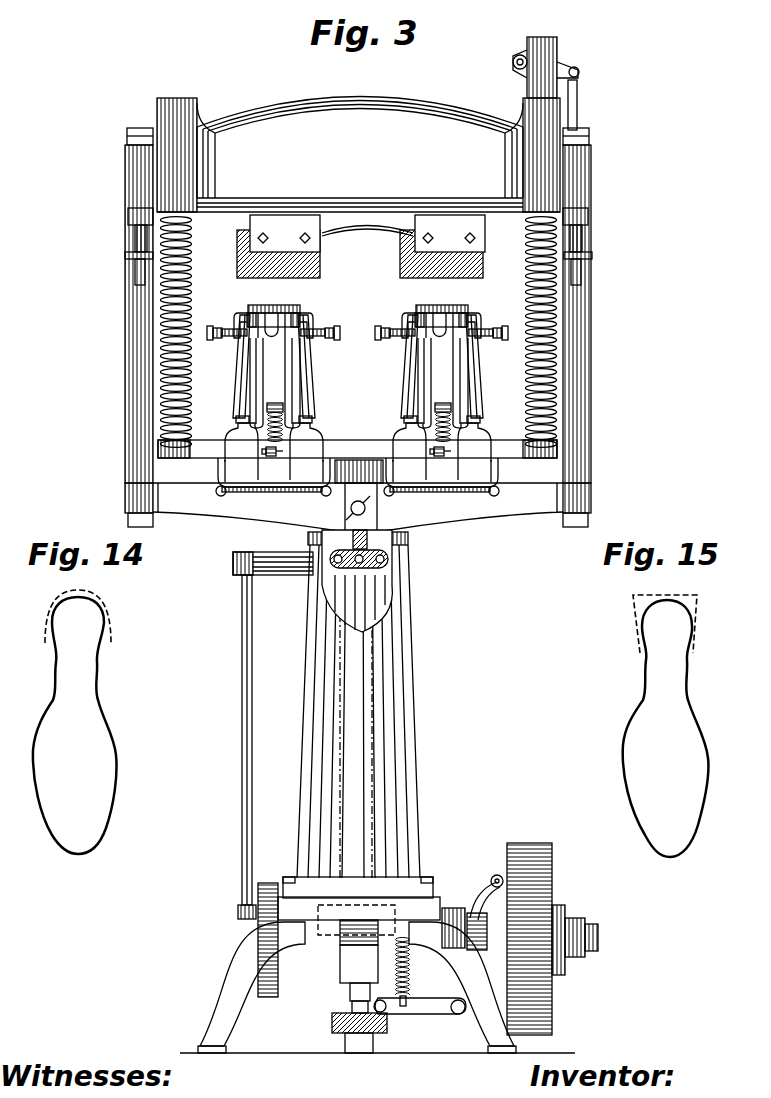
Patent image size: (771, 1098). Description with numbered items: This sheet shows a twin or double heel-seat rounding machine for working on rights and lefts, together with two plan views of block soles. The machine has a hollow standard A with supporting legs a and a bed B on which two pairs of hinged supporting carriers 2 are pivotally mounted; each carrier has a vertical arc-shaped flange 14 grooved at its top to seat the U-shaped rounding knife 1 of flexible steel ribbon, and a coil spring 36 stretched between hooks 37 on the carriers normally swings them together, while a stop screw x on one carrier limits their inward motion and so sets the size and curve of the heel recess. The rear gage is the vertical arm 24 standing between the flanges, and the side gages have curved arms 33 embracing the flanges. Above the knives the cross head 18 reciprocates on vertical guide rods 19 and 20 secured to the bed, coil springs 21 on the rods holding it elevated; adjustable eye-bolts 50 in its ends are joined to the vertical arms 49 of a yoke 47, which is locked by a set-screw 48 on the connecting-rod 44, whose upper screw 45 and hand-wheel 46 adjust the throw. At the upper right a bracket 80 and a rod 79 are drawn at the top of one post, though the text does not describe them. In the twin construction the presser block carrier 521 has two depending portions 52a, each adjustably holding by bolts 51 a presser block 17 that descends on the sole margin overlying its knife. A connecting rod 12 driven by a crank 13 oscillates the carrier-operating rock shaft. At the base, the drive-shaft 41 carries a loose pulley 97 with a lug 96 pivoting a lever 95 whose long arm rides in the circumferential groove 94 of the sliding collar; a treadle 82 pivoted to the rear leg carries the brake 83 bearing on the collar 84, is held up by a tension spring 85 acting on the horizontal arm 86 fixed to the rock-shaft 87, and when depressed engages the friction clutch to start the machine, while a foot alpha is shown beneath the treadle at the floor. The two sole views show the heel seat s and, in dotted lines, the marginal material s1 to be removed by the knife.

In FIG. 3, the bracket 80 is at (560, 62).
In FIG. 3, the rod 79 is at (578, 116).
In FIG. 3, the cross head 18 is at (358, 155).
In FIG. 3, the vertical arms 49 is at (128, 405).
In FIG. 3, the adjustable eye-bolts 50 is at (133, 244).
In FIG. 3, the vertical guide rod 20 is at (192, 245).
In FIG. 3, the coil springs 21 is at (190, 277).
In FIG. 3, the vertical guide rod 19 is at (530, 298).
In FIG. 3, the presser block 17 is at (403, 272).
In FIG. 3, the presser block carrier 521 is at (393, 218).
In FIG. 3, the depending portions 52a is at (400, 233).
In FIG. 3, the bolts 51 is at (360, 258).
In FIG. 3, the rounding knife 1 is at (280, 310).
In FIG. 3, the arm 33 is at (242, 316).
In FIG. 3, the vertical flange 14 is at (242, 384).
In FIG. 3, the vertical arm 24 is at (274, 355).
In FIG. 3, the supporting carriers 2 is at (238, 441).
In FIG. 3, the bed B is at (357, 451).
In FIG. 3, the coil spring 36 is at (468, 502).
In FIG. 3, the hook 37 is at (217, 492).
In FIG. 3, the stop screw x is at (270, 457).
In FIG. 3, the yoke 47 is at (358, 507).
In FIG. 3, the set-screw 48 is at (351, 508).
In FIG. 3, the hollow standard A is at (420, 696).
In FIG. 3, the connecting-rod 44 is at (365, 598).
In FIG. 3, the screw 45 is at (368, 538).
In FIG. 3, the hand-wheel 46 is at (388, 561).
In FIG. 3, the connecting rod 12 is at (242, 646).
In FIG. 3, the crank 13 is at (242, 928).
In FIG. 3, the supporting legs a is at (240, 973).
In FIG. 3, the pulley or collar 84 is at (340, 950).
In FIG. 3, the brake 83 is at (345, 980).
In FIG. 3, the tension spring 85 is at (406, 979).
In FIG. 3, the treadle 82 is at (332, 1023).
In FIG. 3, the foot alpha is at (345, 1043).
In FIG. 3, the horizontal arm 86 is at (428, 1012).
In FIG. 3, the rock-shaft 87 is at (458, 1015).
In FIG. 3, the circumferential groove 94 is at (480, 951).
In FIG. 3, the loose pulley 97 is at (534, 839).
In FIG. 3, the drive-shaft 41 is at (599, 939).
In FIG. 3, the lever 95 is at (485, 900).
In FIG. 3, the lug 96 is at (496, 874).
In FIG. 14, the heel seat s is at (75, 725).
In FIG. 15, the heel seat s is at (666, 728).
In FIG. 14, the marginal material s1 is at (106, 611).
In FIG. 15, the marginal material s1 is at (692, 611).